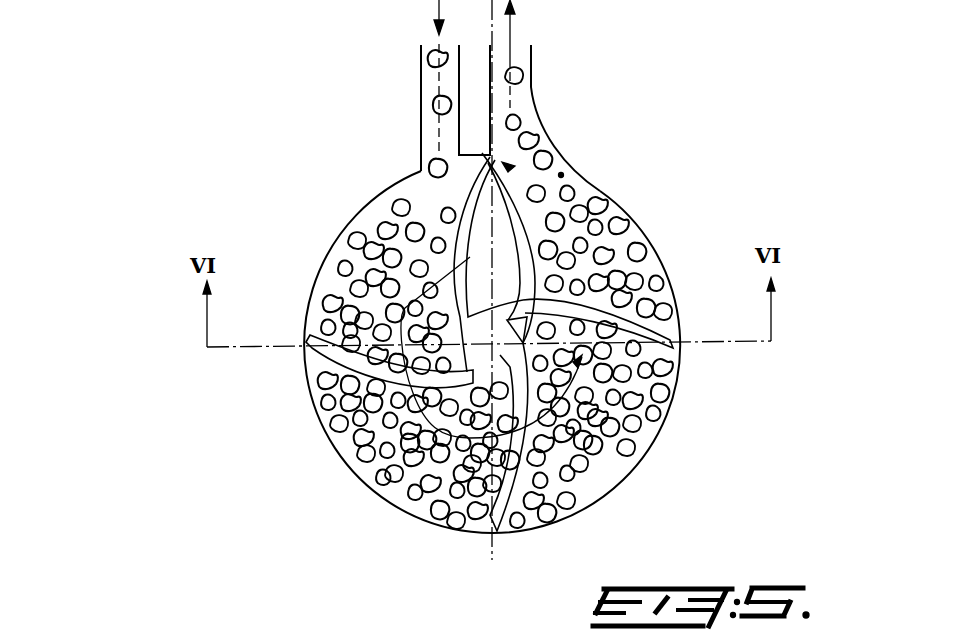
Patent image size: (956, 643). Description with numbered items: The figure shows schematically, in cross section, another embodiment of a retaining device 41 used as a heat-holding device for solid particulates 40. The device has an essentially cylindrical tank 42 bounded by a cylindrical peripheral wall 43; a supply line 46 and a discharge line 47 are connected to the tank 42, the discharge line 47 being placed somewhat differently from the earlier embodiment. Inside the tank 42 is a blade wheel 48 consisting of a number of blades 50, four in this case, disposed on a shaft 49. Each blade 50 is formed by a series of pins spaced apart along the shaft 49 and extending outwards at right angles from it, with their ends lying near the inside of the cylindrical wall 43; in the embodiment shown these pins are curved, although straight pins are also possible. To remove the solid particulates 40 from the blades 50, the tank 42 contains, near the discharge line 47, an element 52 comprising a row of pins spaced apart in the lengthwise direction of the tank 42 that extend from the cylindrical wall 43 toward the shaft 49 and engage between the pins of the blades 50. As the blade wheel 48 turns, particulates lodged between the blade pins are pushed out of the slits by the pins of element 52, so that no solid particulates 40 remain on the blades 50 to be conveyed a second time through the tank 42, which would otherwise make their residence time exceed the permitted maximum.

The solid particulates 40 is at (432, 60).
The retaining device 41 is at (319, 460).
The tank 42 is at (637, 219).
The cylindrical peripheral wall 43 is at (323, 252).
The supply line 46 is at (420, 100).
The discharge line 47 is at (532, 77).
The blade wheel 48 is at (502, 287).
The shaft 49 is at (487, 352).
The blade 50 is at (518, 500).
The element 52 is at (512, 203).